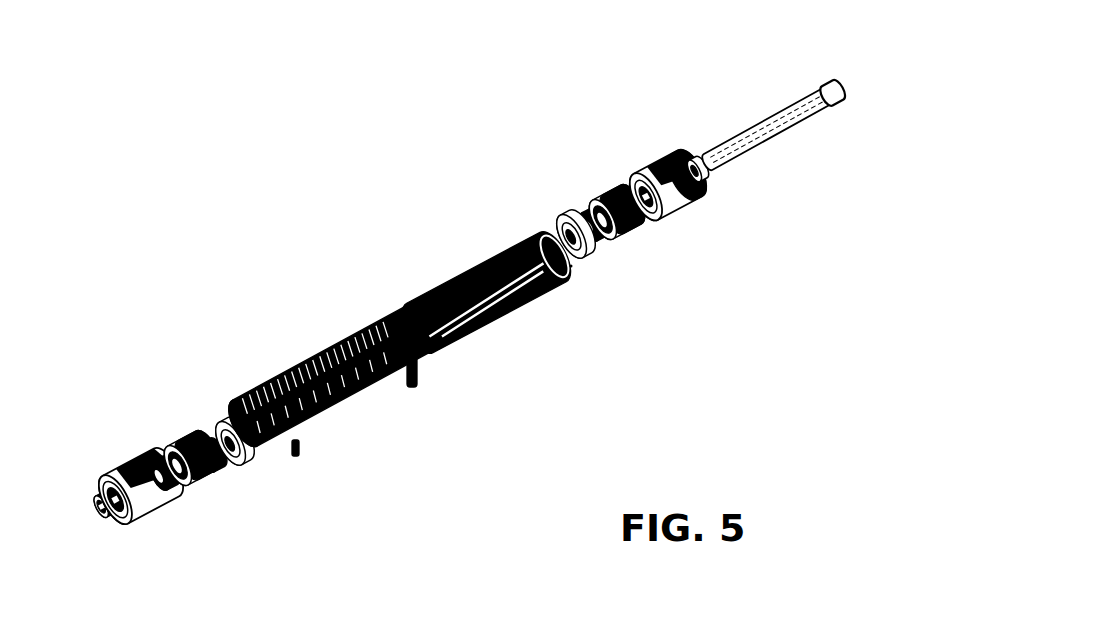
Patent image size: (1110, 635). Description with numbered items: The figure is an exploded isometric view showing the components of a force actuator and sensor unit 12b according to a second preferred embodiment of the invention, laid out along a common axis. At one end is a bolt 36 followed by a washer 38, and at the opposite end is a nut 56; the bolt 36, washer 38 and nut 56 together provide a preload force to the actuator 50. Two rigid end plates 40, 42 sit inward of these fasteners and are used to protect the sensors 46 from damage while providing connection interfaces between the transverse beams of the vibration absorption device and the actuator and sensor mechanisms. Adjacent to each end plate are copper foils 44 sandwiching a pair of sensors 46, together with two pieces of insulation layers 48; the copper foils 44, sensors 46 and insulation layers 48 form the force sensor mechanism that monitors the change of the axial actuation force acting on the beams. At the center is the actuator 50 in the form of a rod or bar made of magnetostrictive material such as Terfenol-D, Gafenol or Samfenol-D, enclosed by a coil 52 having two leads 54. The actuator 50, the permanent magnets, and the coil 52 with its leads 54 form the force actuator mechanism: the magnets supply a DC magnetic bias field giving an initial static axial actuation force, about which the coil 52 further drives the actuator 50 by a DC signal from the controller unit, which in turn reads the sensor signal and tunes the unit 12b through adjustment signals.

The force actuator and sensor unit 12b is at (311, 151).
The bolt 36 is at (797, 86).
The washer 38 is at (681, 136).
The rigid end plate 40 is at (715, 206).
The rigid end plate 42 is at (129, 442).
The copper foils 44 is at (153, 428).
The sensors 46 is at (219, 491).
The insulation layers 48 is at (257, 471).
The actuator 50 is at (486, 275).
The coil 52 is at (332, 343).
The leads 54 is at (319, 452).
The nut 56 is at (87, 474).